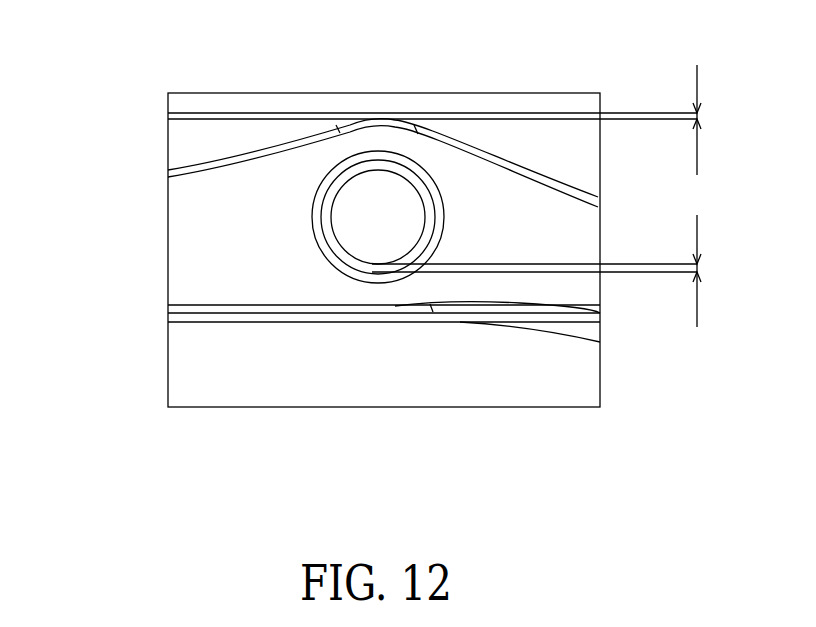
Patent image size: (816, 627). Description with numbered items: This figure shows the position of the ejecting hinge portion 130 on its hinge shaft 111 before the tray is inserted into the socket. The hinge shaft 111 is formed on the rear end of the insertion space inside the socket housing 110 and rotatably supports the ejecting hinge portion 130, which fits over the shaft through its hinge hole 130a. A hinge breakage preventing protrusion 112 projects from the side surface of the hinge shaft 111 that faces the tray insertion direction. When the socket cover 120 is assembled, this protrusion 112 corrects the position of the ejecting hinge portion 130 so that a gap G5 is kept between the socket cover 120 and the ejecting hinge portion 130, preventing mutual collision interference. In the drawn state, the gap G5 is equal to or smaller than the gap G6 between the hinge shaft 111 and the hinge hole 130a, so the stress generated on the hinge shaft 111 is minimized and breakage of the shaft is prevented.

The socket housing 110 is at (185, 146).
The hinge shaft 111 is at (384, 195).
The hinge breakage preventing protrusion 112 is at (378, 272).
The socket cover 120 is at (230, 108).
The ejecting hinge portion 130 is at (185, 279).
The hinge hole 130a is at (333, 263).
The gap between socket cover and ejecting hinge portion G5 is at (714, 120).
The gap between hinge shaft and hinge hole G6 is at (714, 271).